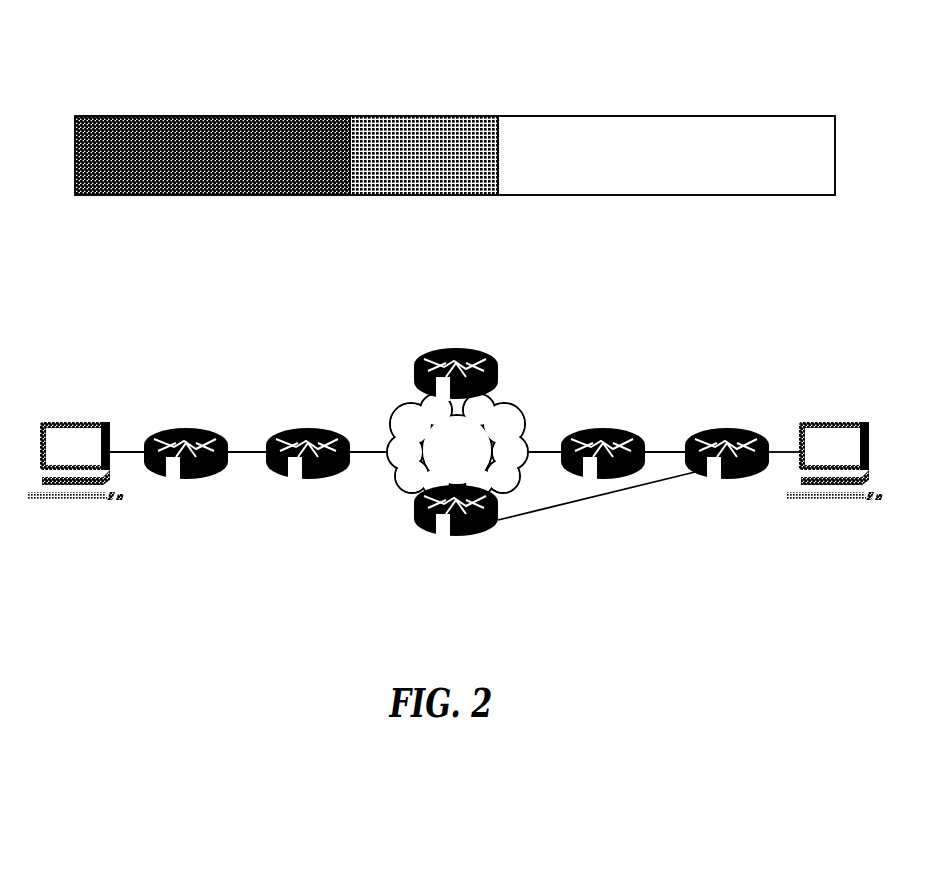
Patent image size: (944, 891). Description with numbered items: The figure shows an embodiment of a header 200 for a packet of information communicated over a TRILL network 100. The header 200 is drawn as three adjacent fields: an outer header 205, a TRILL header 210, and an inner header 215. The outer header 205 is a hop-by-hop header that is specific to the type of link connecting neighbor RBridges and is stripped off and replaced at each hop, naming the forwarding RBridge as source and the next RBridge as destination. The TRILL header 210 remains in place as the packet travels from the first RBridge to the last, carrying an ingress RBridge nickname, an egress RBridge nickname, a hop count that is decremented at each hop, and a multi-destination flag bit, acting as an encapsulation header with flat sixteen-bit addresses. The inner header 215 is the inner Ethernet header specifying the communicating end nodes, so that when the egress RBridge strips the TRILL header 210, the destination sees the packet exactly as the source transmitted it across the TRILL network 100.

The header 200 is at (437, 31).
The outer header 205 is at (212, 155).
The TRILL header 210 is at (424, 155).
The inner header 215 is at (666, 155).
The TRILL network 100 is at (792, 350).